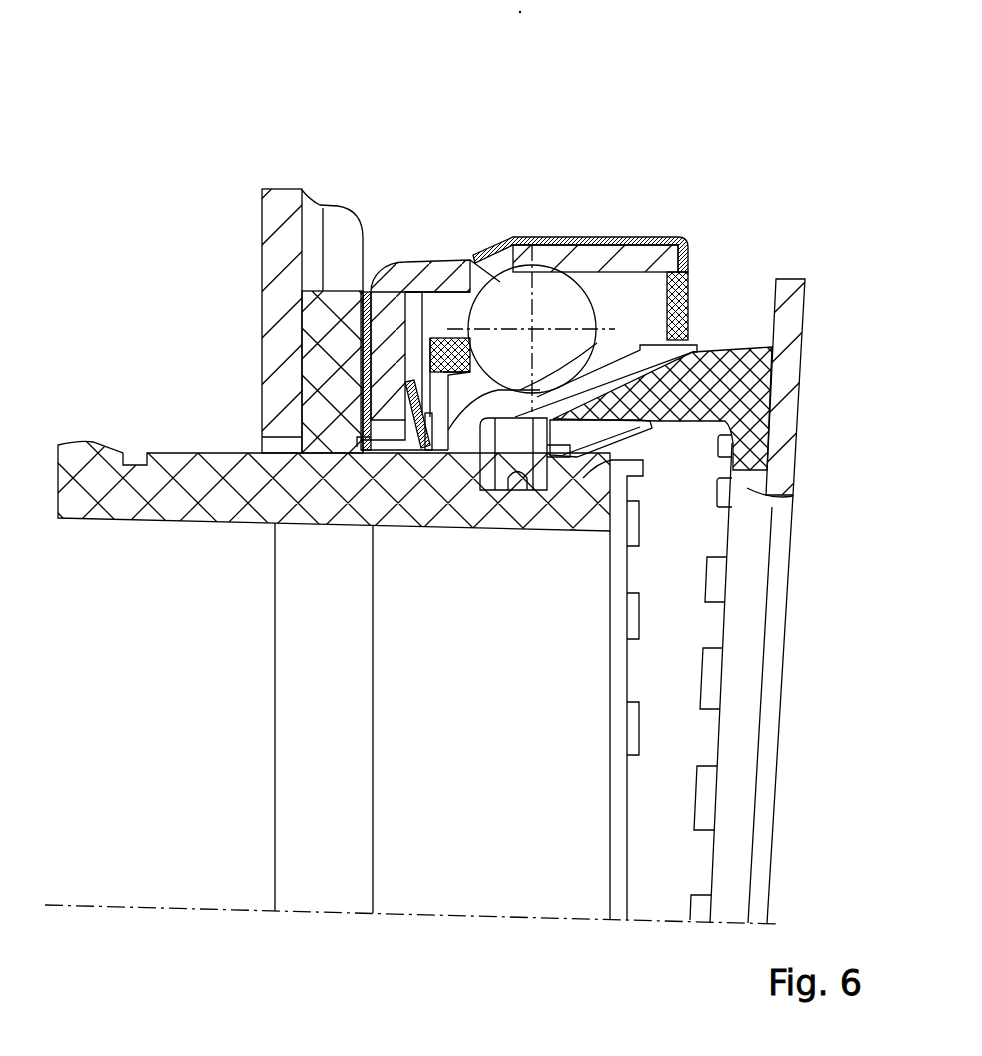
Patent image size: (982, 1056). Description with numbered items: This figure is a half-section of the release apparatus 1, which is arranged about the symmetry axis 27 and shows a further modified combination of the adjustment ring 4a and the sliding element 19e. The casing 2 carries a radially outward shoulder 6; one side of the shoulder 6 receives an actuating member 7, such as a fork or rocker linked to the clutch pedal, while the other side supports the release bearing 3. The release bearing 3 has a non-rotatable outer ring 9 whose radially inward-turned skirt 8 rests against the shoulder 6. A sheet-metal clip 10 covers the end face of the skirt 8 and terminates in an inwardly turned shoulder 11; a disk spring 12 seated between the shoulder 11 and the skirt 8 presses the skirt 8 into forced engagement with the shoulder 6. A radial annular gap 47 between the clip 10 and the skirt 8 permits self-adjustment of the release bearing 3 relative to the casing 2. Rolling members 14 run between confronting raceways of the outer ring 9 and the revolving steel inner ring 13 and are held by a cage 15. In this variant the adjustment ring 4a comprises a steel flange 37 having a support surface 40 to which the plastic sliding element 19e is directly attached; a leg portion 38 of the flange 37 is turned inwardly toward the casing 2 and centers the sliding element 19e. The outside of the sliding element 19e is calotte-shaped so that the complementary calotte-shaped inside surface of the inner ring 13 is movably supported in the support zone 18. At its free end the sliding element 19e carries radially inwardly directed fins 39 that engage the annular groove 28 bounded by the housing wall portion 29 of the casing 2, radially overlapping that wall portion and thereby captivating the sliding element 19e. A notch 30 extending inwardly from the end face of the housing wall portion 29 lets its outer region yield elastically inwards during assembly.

The release apparatus 1 is at (392, 247).
The casing 2 is at (117, 447).
The release bearing 3 is at (660, 223).
The adjustment ring 4a is at (802, 517).
The radial shoulder 6 is at (313, 312).
The actuating member 7 is at (273, 212).
The skirt 8 is at (385, 352).
The outer ring 9 is at (427, 263).
The clip 10 is at (400, 387).
The inwardly turned shoulder 11 is at (440, 452).
The disk spring 12 is at (405, 450).
The inner ring 13 is at (693, 340).
The rolling members 14 is at (473, 290).
The cage 15 is at (480, 352).
The support zone 18 is at (635, 350).
The sliding element 19e is at (747, 347).
The symmetry axis 27 is at (460, 905).
The annular groove 28 is at (513, 490).
The housing wall portion 29 is at (640, 467).
The notch 30 is at (615, 470).
The flange 37 is at (785, 405).
The leg portion 38 is at (748, 489).
The fins 39 is at (583, 435).
The support surface 40 is at (770, 375).
The radial annular gap 47 is at (370, 452).